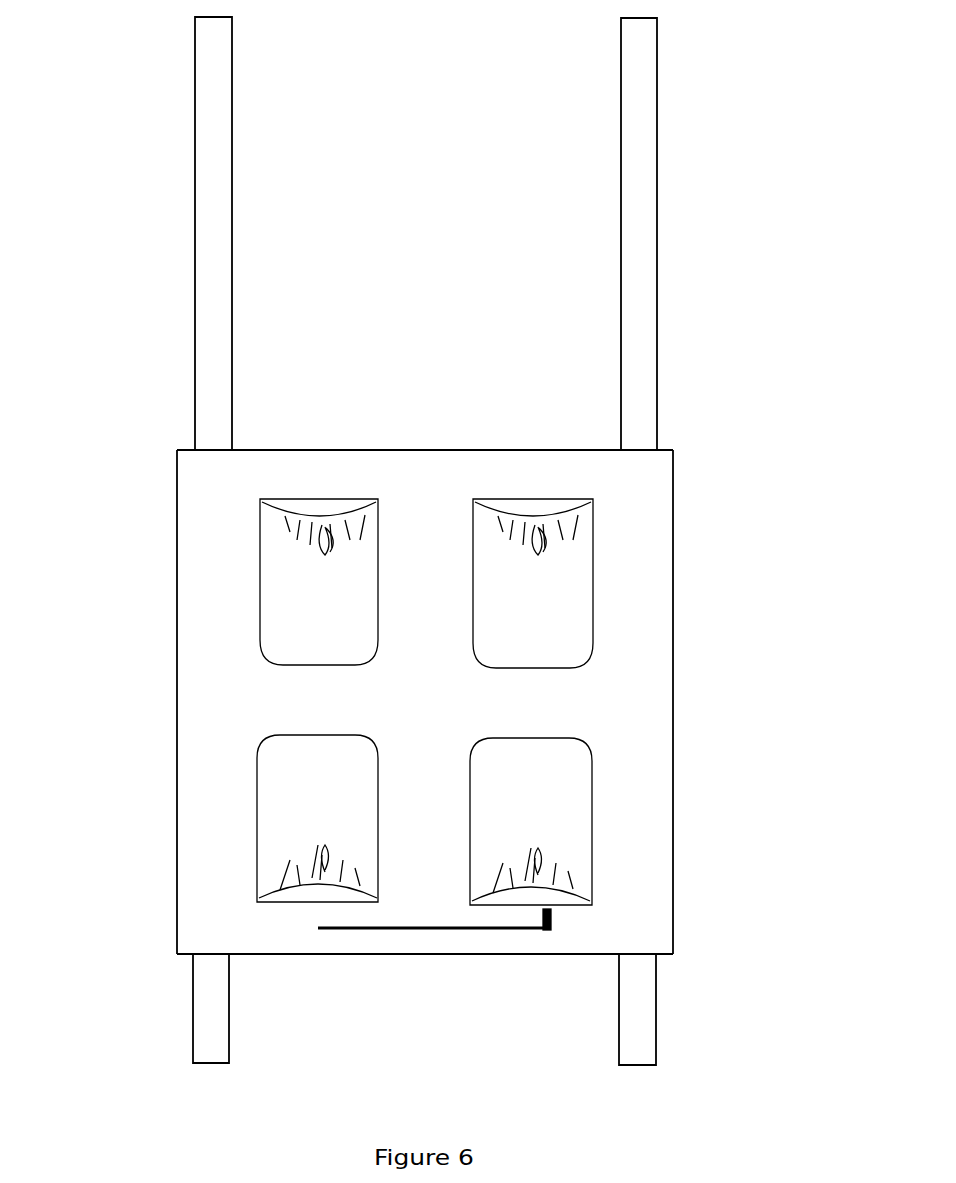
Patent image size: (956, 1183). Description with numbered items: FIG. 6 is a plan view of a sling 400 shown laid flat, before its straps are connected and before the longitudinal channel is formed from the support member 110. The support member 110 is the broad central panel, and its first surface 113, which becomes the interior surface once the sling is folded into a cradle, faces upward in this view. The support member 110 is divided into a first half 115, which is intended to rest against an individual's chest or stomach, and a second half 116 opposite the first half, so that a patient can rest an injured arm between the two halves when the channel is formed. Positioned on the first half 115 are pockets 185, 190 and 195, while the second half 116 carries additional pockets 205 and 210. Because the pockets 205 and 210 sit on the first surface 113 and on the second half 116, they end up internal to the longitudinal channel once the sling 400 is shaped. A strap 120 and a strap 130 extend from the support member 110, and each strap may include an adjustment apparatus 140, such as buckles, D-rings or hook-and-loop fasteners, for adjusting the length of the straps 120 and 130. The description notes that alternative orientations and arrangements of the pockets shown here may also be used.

The sling 400 is at (763, 378).
The support member 110 is at (673, 720).
The first interior surface 113 is at (247, 702).
The first half 115 is at (478, 942).
The second half 116 is at (427, 460).
The strap 120 is at (232, 303).
The strap 130 is at (657, 265).
The adjustment apparatus 140 is at (229, 1042).
The pocket 185 is at (292, 847).
The pocket 190 is at (563, 855).
The pocket 195 is at (381, 930).
The pocket 205 is at (275, 575).
The pocket 210 is at (587, 577).